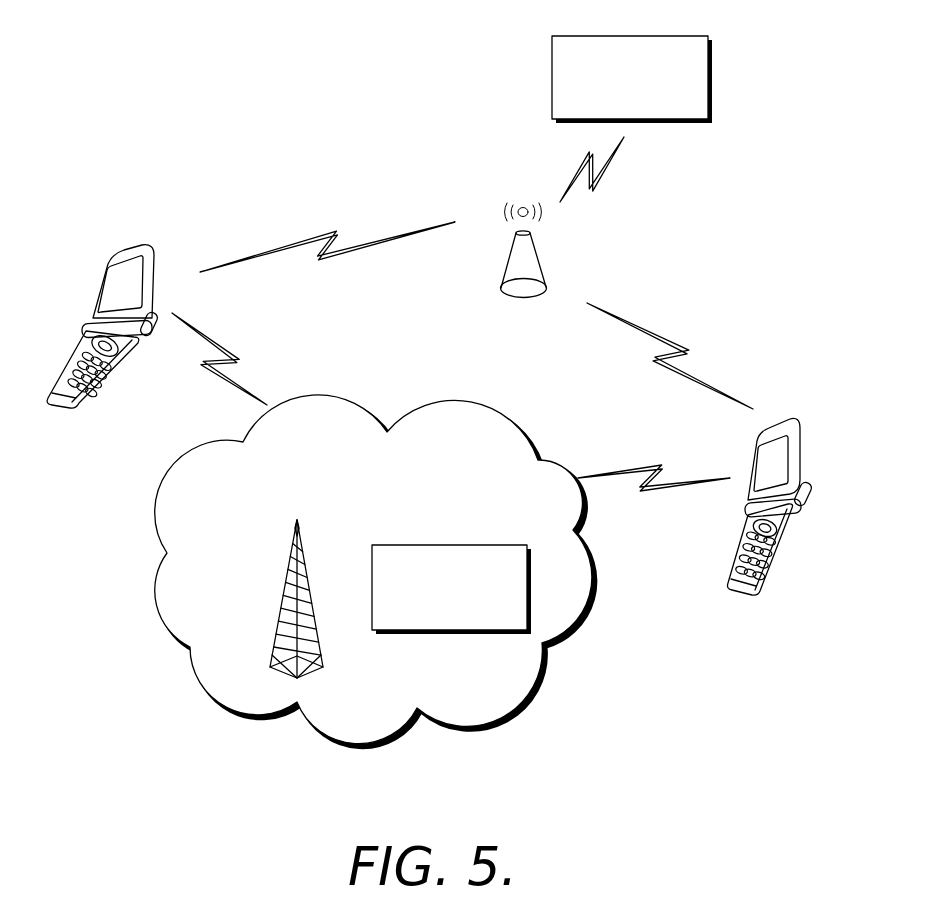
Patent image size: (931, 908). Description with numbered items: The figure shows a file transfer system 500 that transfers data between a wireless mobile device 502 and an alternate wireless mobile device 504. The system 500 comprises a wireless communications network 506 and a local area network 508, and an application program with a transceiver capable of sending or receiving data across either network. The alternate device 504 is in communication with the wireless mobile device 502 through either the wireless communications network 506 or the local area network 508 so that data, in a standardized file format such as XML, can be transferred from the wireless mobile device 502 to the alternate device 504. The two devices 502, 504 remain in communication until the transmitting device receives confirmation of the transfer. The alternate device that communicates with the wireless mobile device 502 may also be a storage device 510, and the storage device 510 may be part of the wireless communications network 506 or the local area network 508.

The system 500 is at (399, 110).
The wireless mobile device 502 is at (142, 246).
The alternate wireless mobile device 504 is at (790, 420).
The wireless communications network 506 is at (230, 710).
The local area network 508 is at (543, 272).
The storage device 510 is at (712, 78).